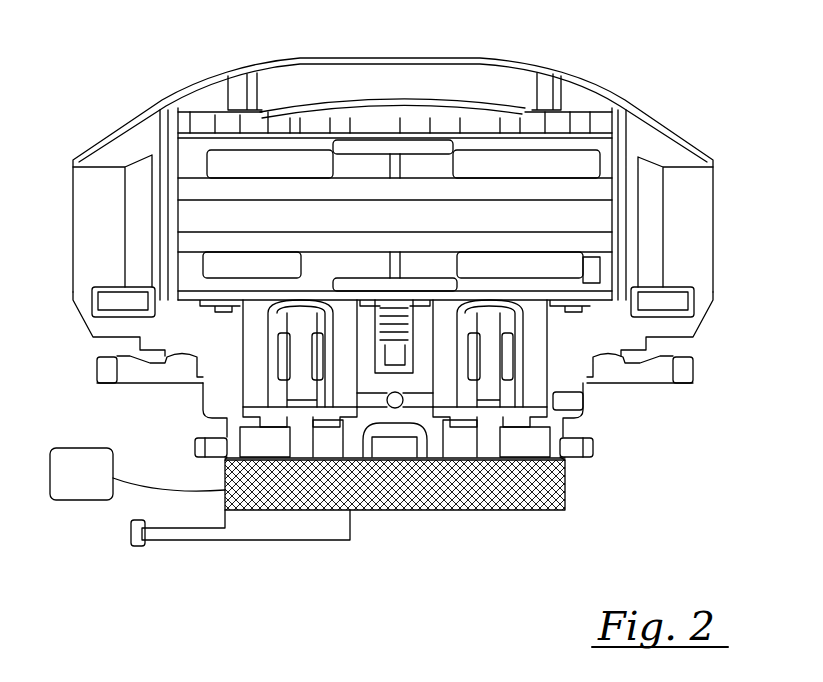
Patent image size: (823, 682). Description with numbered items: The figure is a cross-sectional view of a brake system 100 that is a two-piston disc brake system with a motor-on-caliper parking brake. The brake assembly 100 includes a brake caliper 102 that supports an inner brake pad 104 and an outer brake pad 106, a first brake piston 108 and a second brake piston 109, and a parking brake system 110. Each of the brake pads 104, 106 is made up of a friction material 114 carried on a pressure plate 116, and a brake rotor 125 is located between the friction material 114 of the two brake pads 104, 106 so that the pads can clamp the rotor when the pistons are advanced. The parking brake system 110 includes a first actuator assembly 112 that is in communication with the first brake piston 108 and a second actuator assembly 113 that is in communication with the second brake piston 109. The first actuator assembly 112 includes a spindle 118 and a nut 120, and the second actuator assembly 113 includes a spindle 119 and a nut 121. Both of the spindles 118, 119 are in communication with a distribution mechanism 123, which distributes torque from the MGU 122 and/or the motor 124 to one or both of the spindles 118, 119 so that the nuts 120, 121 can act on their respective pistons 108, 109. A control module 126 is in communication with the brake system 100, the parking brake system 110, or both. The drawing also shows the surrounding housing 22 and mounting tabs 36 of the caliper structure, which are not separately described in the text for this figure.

The brake system 100 is at (97, 93).
The housing 22 is at (724, 216).
The mounting tabs 36 is at (259, 108).
The brake caliper 102 is at (320, 72).
The inner brake pad 104 is at (248, 263).
The outer brake pad 106 is at (273, 165).
The first brake piston 108 is at (257, 345).
The second brake piston 109 is at (530, 345).
The parking brake system 110 is at (553, 515).
The first actuator assembly 112 is at (252, 426).
The second actuator assembly 113 is at (532, 426).
The friction material 114 is at (308, 168).
The pressure plate 116 is at (522, 150).
The spindle 118 is at (283, 405).
The spindle 119 is at (505, 412).
The nut 120 is at (283, 372).
The nut 121 is at (505, 370).
The MGU 122 is at (255, 550).
The distribution mechanism 123 is at (455, 490).
The motor 124 is at (330, 528).
The brake rotor 125 is at (446, 230).
The control module 126 is at (95, 484).